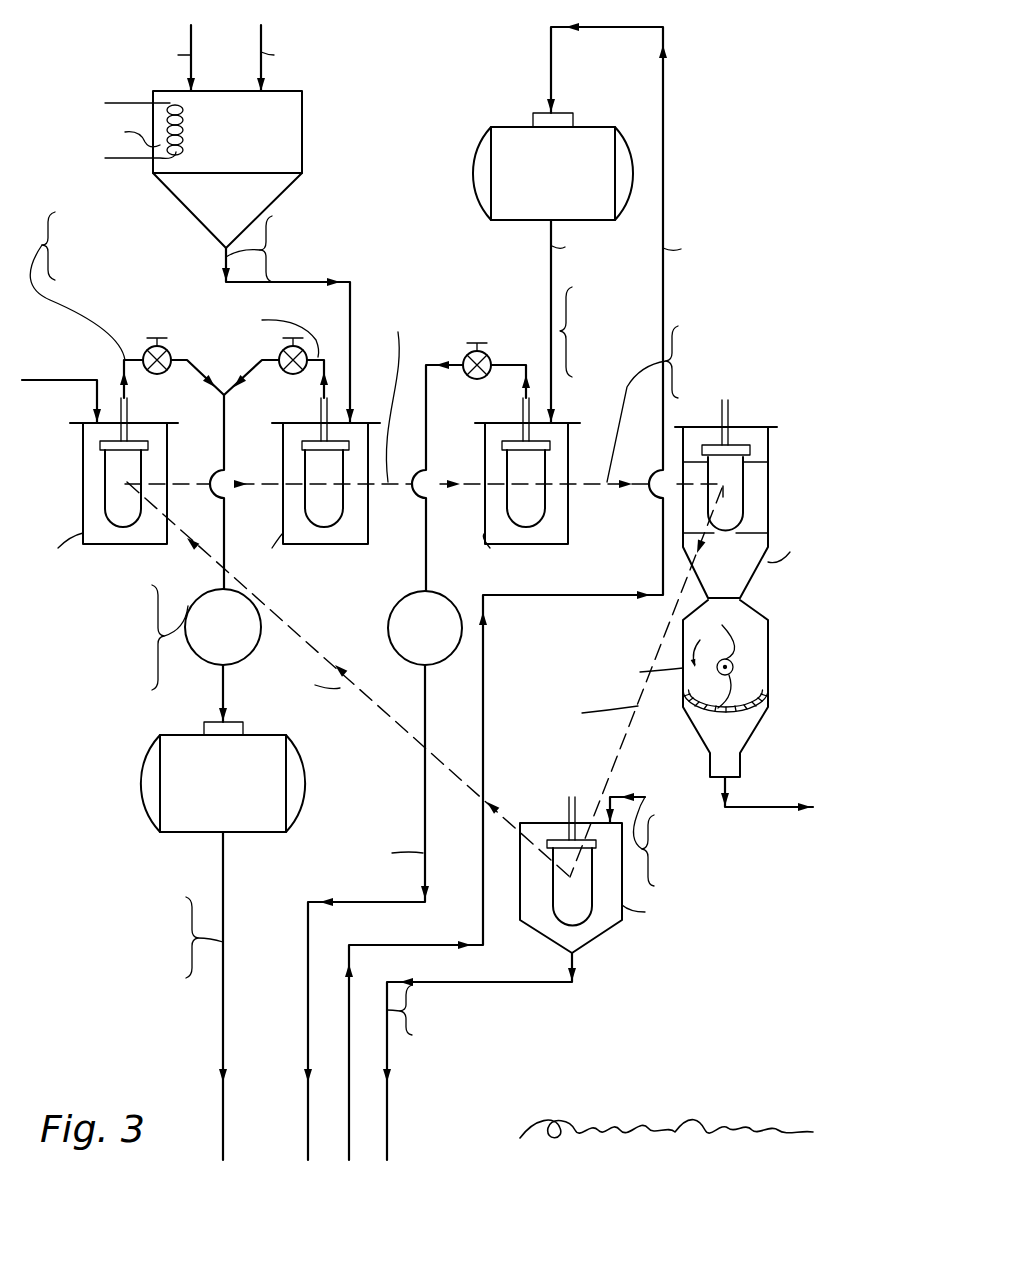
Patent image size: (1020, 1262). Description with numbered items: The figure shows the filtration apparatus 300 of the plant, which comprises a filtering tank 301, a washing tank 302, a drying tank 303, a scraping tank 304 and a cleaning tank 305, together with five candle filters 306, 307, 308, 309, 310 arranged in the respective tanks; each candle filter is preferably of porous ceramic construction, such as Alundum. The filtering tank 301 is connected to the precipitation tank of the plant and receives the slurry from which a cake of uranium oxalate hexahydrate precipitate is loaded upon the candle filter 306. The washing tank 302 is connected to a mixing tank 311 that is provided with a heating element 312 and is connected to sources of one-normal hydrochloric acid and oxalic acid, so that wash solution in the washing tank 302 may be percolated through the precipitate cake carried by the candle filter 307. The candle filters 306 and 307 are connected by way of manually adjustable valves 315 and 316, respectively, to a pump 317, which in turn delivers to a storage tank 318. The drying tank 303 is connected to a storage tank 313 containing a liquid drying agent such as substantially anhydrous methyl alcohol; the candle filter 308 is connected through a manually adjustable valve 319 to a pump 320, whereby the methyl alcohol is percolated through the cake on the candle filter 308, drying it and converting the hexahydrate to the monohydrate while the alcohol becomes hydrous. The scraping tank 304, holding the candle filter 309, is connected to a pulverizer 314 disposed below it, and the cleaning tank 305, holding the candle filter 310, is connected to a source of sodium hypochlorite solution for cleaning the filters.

The filtration apparatus 300 is at (416, 591).
The filtering tank 301 is at (83, 455).
The washing tank 302 is at (283, 455).
The drying tank 303 is at (485, 455).
The scraping tank 304 is at (752, 578).
The cleaning tank 305 is at (612, 936).
The candle filter 306 is at (105, 505).
The candle filter 307 is at (305, 505).
The candle filter 308 is at (507, 505).
The candle filter 309 is at (708, 500).
The candle filter 310 is at (585, 926).
The mixing tank 311 is at (302, 130).
The heating element 312 is at (165, 180).
The storage tank 313 is at (473, 173).
The pulverizer 314 is at (751, 733).
The manually adjustable valve 315 is at (155, 375).
The manually adjustable valve 316 is at (293, 375).
The pump 317 is at (258, 610).
The storage tank 318 is at (143, 784).
The manually adjustable valve 319 is at (487, 380).
The pump 320 is at (393, 612).